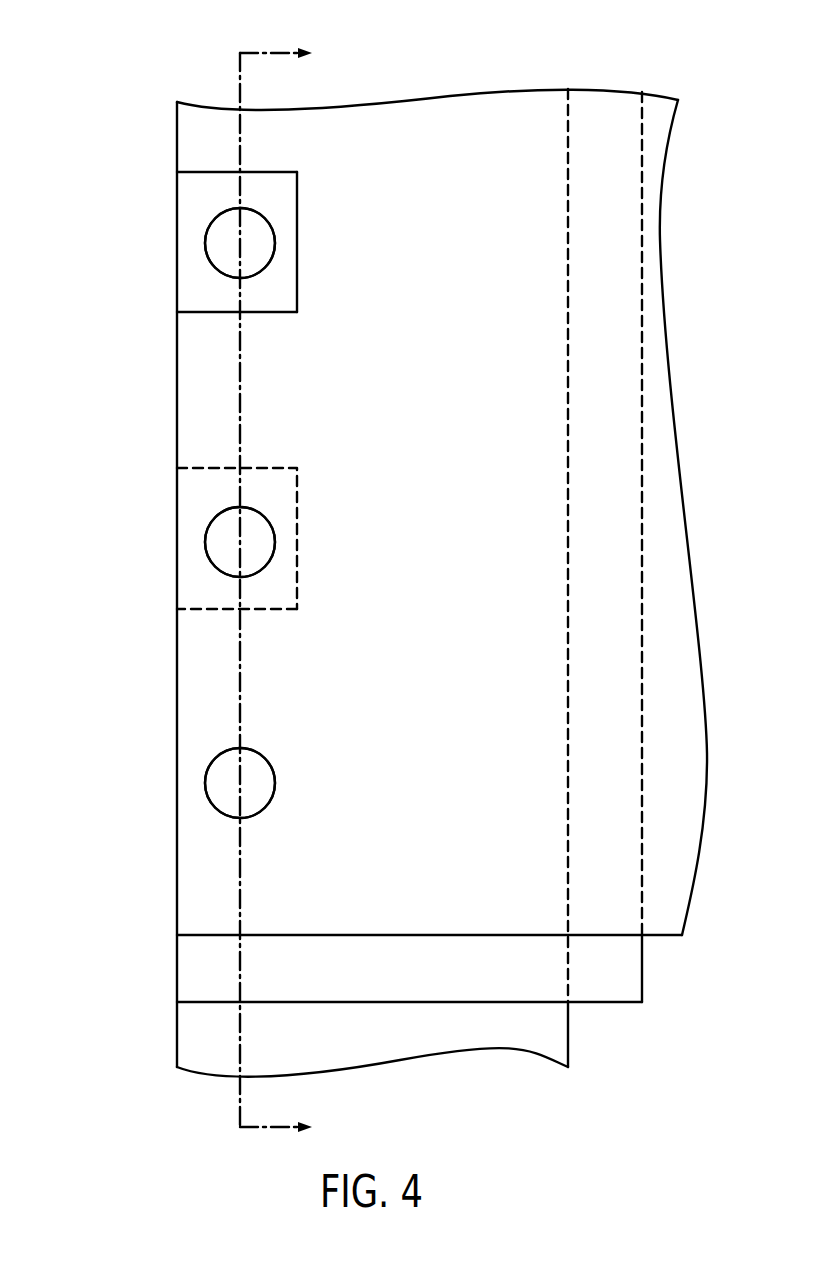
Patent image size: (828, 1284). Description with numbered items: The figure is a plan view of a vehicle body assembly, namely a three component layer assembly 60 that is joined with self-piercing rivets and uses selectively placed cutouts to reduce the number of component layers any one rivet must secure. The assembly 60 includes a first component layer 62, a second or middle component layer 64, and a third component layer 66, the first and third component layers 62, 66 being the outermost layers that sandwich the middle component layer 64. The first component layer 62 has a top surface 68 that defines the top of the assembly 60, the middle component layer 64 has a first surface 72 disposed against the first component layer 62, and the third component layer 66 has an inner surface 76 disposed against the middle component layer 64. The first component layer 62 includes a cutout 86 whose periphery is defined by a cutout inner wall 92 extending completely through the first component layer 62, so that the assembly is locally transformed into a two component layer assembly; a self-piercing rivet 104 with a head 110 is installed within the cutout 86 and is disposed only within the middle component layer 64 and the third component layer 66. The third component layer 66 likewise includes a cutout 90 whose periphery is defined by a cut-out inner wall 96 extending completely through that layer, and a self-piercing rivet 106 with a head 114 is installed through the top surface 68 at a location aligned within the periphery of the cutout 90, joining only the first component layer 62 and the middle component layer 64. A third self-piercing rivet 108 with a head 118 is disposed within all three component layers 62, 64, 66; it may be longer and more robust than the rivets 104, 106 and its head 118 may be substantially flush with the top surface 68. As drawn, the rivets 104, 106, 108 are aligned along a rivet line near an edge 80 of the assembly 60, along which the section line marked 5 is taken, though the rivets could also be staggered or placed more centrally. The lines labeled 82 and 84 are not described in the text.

The section line 5- 5 is at (284, 591).
The three component layer assembly 60 is at (88, 58).
The first component layer 62 is at (673, 918).
The second component layer 64 is at (627, 992).
The third component layer 66 is at (555, 1055).
The top surface 68 is at (422, 172).
The first surface 72 is at (193, 293).
The inner surface 76 is at (422, 1047).
The edge 80 is at (177, 890).
The edge of intermediate portion 82 is at (177, 968).
The edge of lower portion 84 is at (177, 1040).
The cutout 86 is at (285, 172).
The cutout 90 is at (205, 468).
The cutout inner wall 92 is at (265, 173).
The cut-out inner wall 96 is at (205, 609).
The self-piercing rivet 104 is at (225, 220).
The self-piercing rivet 106 is at (210, 518).
The third self-piercing rivet 108 is at (218, 752).
The head 110 is at (210, 253).
The head 114 is at (206, 541).
The head 118 is at (206, 790).